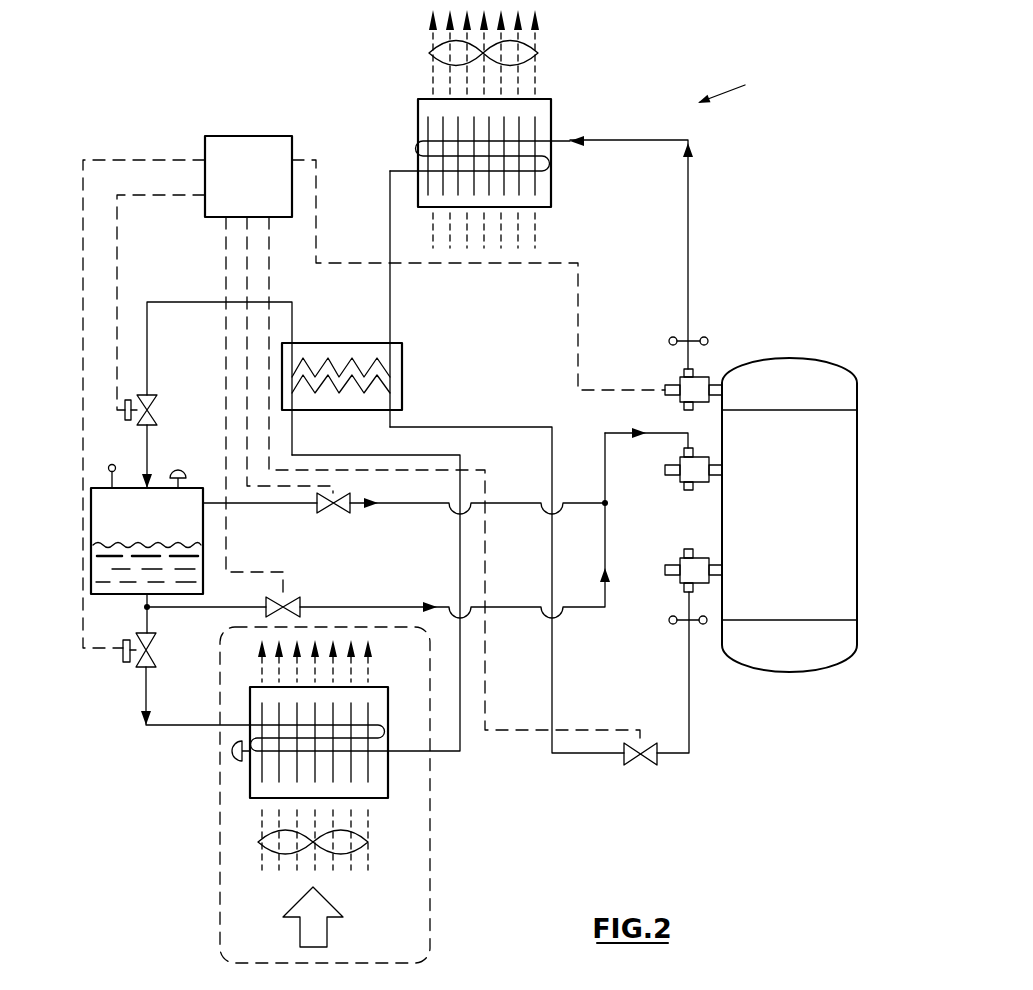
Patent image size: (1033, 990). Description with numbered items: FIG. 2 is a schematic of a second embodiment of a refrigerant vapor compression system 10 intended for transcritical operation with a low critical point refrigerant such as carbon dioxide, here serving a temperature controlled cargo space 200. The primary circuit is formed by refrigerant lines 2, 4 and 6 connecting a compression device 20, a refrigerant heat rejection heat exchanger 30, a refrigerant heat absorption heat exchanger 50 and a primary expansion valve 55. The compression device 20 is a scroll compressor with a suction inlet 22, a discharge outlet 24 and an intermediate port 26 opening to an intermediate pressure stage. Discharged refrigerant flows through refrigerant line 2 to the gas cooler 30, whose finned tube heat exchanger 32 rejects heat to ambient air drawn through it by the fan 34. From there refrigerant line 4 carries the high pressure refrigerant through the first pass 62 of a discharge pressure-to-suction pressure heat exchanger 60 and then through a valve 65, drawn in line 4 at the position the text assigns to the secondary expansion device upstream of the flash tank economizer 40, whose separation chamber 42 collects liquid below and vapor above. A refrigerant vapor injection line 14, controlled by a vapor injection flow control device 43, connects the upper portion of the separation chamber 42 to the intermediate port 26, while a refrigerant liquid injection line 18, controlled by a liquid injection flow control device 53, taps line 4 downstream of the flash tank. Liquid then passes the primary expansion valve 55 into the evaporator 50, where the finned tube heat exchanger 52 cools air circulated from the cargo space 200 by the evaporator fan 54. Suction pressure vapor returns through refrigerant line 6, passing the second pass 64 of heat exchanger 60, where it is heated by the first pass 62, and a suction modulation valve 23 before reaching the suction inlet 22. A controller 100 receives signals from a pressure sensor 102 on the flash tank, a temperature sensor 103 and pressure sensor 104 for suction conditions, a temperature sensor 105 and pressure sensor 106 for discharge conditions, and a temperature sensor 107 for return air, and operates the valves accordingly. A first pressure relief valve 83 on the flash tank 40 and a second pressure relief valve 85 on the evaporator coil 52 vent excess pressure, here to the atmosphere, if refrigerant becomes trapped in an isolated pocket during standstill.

The refrigerant line 2 is at (652, 140).
The refrigerant line 4 is at (178, 302).
The refrigerant line 6 is at (590, 755).
The refrigerant vapor compression system 10 is at (737, 83).
The refrigerant vapor injection line 14 is at (262, 503).
The refrigerant liquid injection line 18 is at (400, 607).
The multi-stage compression device 20 is at (797, 358).
The suction inlet 22 is at (680, 562).
The suction modulation valve 23 is at (640, 765).
The discharge outlet 24 is at (680, 382).
The intermediate port 26 is at (680, 465).
The refrigerant heat rejection heat exchanger 30 is at (551, 113).
The finned tube heat exchanger 32 is at (548, 172).
The fan 34 is at (540, 55).
The flash tank economizer 40 is at (91, 518).
The separation chamber 42 is at (136, 530).
The vapor injection flow control device 43 is at (340, 513).
The refrigerant heat absorption heat exchanger 50 is at (388, 783).
The finned tube heat exchanger 52 is at (378, 730).
The liquid injection flow control device 53 is at (290, 597).
The evaporator fan 54 is at (370, 842).
The primary expansion valve 55 is at (156, 645).
The discharge pressure-to-suction pressure heat exchanger 60 is at (402, 370).
The first pass 62 is at (343, 358).
The second pass 64 is at (355, 393).
The solenoid valve 65 is at (157, 405).
The first pressure relief valve 83 is at (178, 470).
The second pressure relief valve 85 is at (232, 752).
The controller 100 is at (255, 136).
The pressure sensor 102 is at (115, 465).
The temperature sensor 103 is at (671, 616).
The pressure sensor 104 is at (703, 625).
The temperature sensor 105 is at (671, 337).
The pressure sensor 106 is at (706, 337).
The temperature sensor 107 is at (343, 900).
The temperature controlled cargo space 200 is at (430, 915).